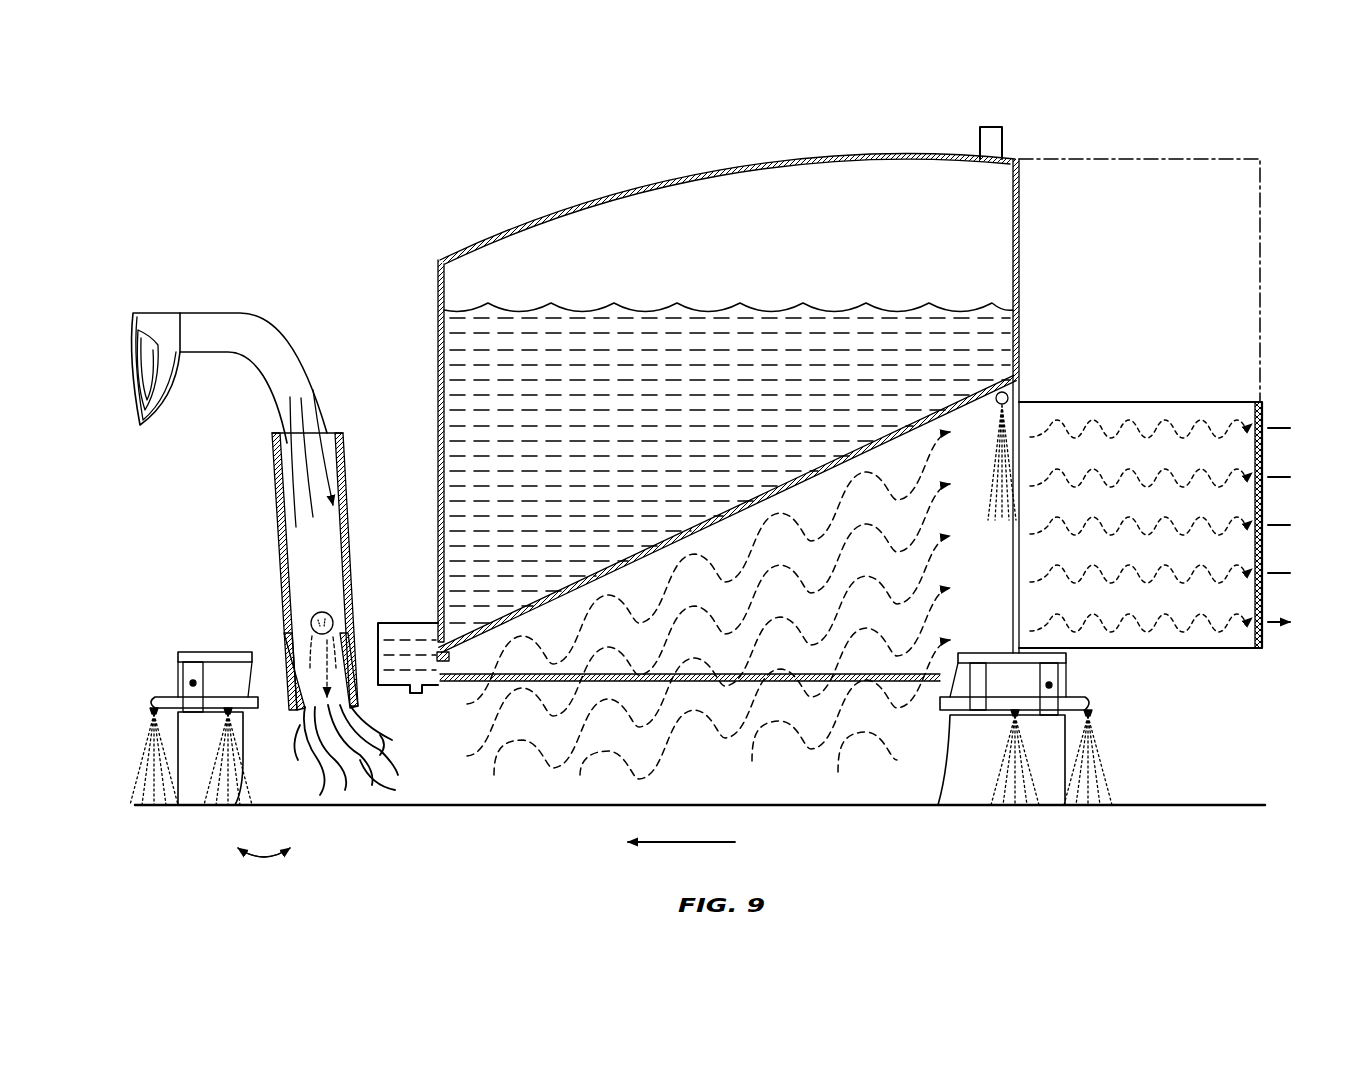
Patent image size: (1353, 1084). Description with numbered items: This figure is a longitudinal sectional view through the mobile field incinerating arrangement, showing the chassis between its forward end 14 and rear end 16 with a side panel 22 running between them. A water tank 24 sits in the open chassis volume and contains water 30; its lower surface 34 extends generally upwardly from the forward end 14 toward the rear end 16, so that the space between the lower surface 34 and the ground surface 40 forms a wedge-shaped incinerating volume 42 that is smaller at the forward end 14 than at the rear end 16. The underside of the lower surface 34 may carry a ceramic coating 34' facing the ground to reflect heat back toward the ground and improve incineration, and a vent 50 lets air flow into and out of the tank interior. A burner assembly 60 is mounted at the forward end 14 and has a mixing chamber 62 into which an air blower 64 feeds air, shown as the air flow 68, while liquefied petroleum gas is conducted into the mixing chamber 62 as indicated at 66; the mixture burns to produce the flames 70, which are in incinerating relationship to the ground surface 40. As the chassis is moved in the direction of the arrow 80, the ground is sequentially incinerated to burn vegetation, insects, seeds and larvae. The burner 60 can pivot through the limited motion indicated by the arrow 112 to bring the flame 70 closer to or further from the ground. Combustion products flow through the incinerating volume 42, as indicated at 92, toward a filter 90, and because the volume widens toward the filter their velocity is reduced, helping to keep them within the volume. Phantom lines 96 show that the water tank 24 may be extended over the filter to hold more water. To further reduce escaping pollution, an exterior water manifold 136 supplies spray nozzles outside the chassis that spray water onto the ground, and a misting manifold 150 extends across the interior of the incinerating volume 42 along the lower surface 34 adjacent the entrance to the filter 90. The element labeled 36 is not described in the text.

The forward end 14 is at (168, 842).
The rear end 16 is at (1055, 763).
The side panel 22 is at (698, 443).
The water tank 24 is at (697, 170).
The water 30 is at (628, 310).
The lower surface 34 is at (709, 518).
The ceramic coating 34' is at (445, 702).
The collection tray 36 is at (442, 648).
The ground surface 40 is at (1210, 805).
The incinerating volume 42 is at (718, 616).
The vent 50 is at (975, 795).
The burner assembly 60 is at (541, 554).
The mixing chamber 62 is at (350, 442).
The air blower 64 is at (150, 313).
The liquefied petroleum gas flow 66 is at (285, 330).
The air flow 68 is at (350, 490).
The flames 70 is at (318, 768).
The direction of movement arrow 80 is at (655, 843).
The filter 90 is at (1258, 650).
The flow of combustion products 92 is at (1152, 423).
The phantom lines 96 is at (1090, 159).
The pivotal motion arrow 112 is at (264, 860).
The exterior water manifold 136 is at (1093, 703).
The misting manifold 150 is at (1018, 392).